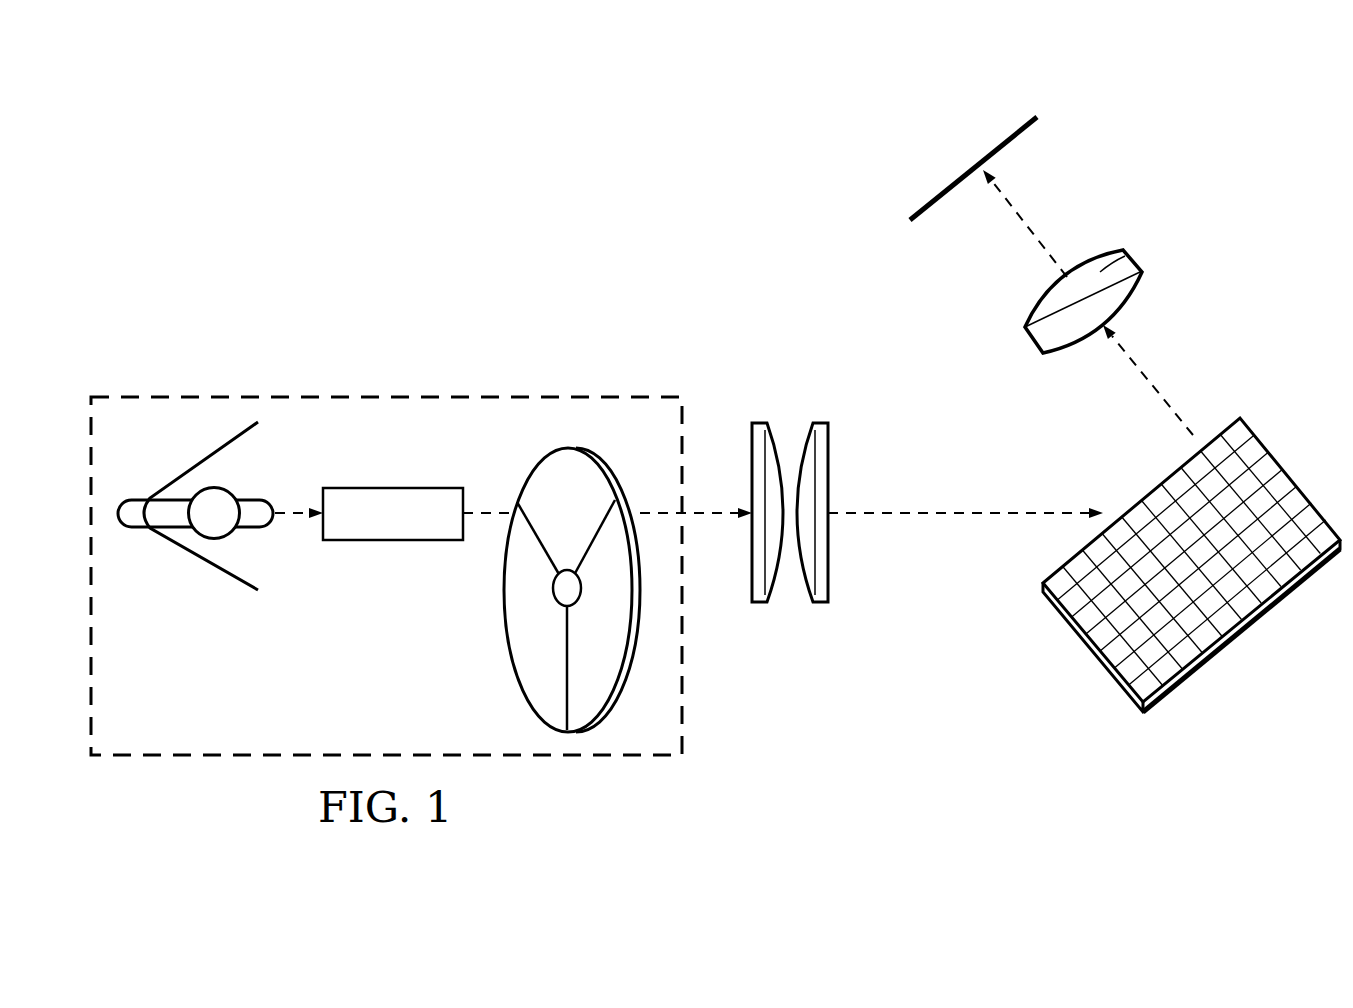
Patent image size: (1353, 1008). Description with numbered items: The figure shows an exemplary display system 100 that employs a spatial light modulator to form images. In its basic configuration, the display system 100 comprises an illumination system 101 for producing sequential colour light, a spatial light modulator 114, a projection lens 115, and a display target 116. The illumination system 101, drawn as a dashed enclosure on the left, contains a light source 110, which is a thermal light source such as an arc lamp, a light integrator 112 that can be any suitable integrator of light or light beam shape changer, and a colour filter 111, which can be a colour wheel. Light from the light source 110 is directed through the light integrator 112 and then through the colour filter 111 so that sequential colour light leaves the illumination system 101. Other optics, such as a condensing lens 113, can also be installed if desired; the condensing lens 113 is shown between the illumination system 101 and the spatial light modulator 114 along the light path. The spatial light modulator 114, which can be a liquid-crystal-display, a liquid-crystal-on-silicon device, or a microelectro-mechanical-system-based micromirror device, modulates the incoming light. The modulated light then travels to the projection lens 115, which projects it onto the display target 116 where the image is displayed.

The display system 100 is at (586, 287).
The illumination system 101 is at (368, 393).
The light source 110 is at (195, 462).
The colour filter 111 is at (500, 610).
The light integrator 112 is at (393, 487).
The condensing lens 113 is at (810, 394).
The spatial light modulator 114 is at (1252, 620).
The projection lens 115 is at (1140, 260).
The display target 116 is at (998, 142).